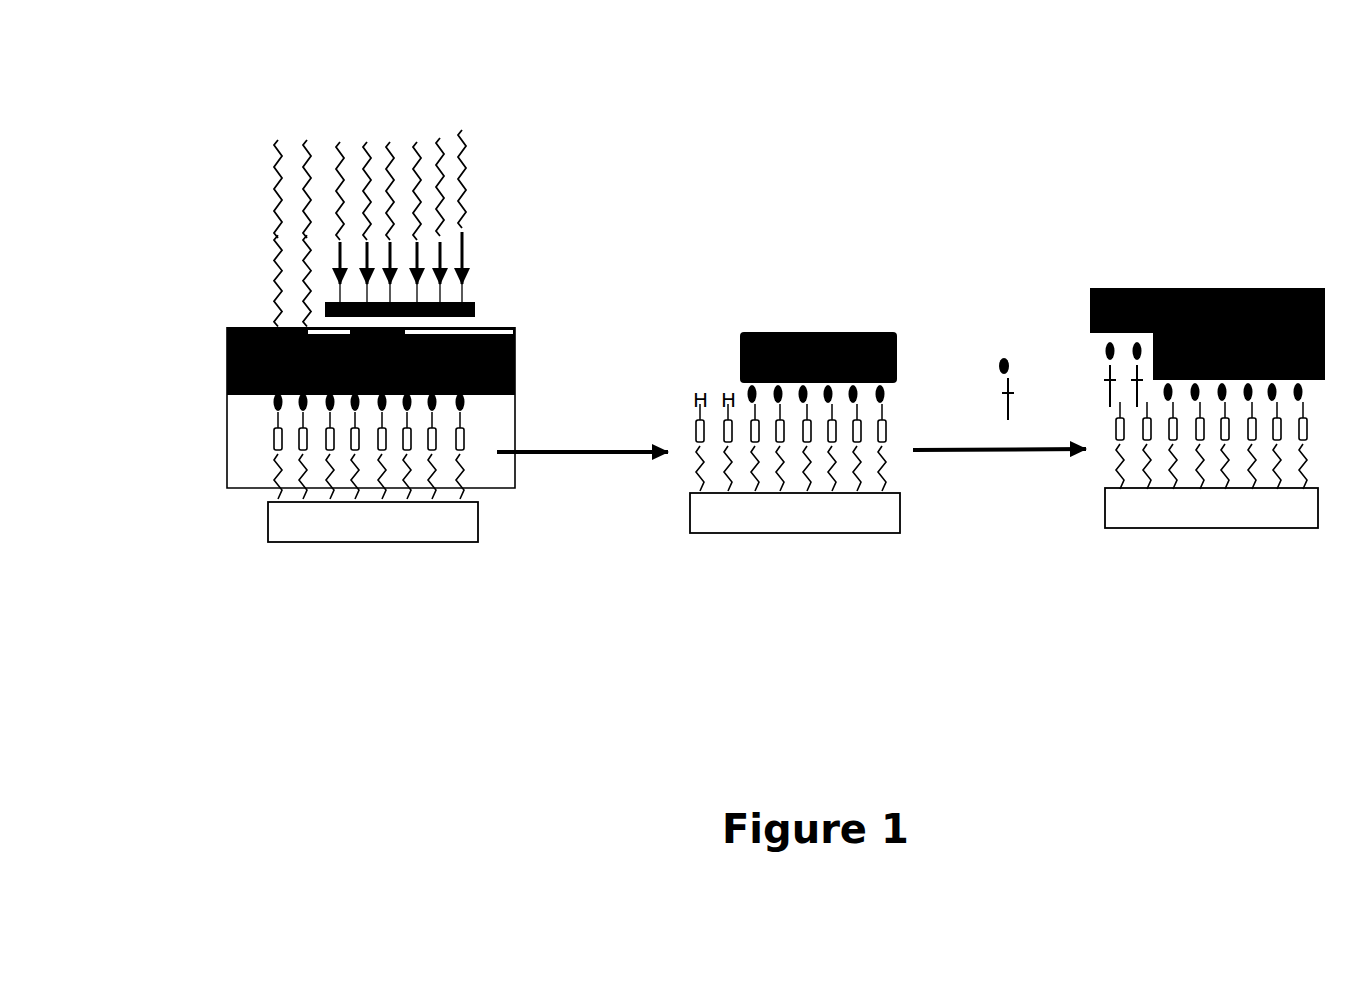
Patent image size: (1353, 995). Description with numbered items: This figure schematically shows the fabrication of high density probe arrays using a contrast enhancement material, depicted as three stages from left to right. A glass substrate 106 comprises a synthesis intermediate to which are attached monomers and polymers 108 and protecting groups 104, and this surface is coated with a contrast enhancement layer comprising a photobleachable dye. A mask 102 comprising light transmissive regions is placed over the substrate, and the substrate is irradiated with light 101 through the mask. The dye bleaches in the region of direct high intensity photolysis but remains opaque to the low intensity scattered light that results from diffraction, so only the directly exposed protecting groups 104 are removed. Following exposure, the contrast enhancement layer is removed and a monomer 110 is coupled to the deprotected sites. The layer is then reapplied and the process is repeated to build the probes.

The light 101 is at (340, 133).
The mask 102 is at (482, 308).
The protecting groups 104 is at (482, 400).
The glass substrate 106 is at (263, 527).
The monomers and polymers 108 is at (473, 444).
The monomer 110 is at (994, 370).